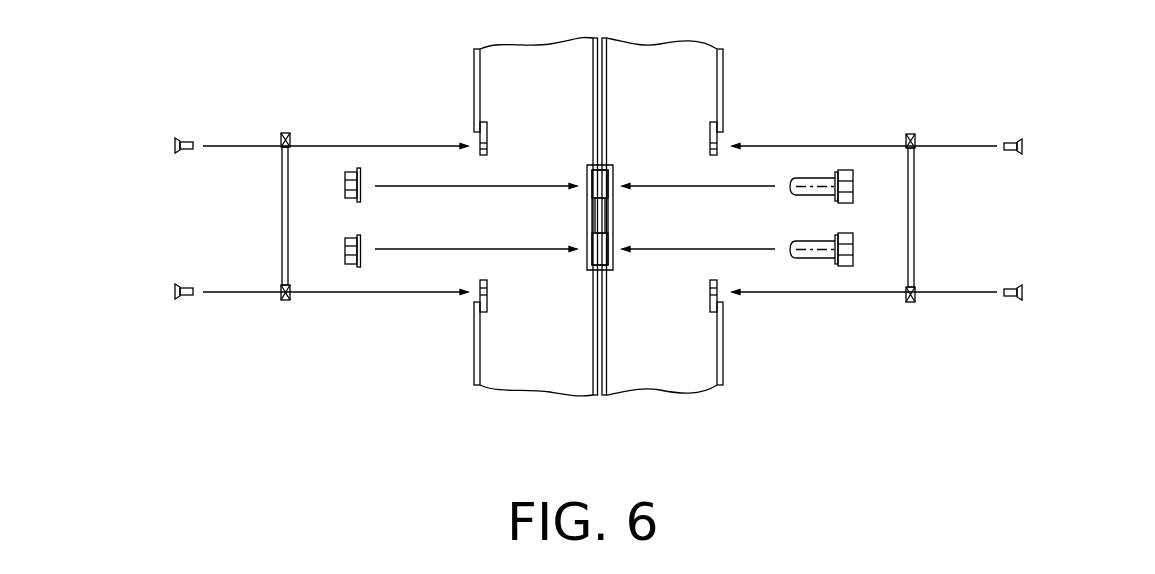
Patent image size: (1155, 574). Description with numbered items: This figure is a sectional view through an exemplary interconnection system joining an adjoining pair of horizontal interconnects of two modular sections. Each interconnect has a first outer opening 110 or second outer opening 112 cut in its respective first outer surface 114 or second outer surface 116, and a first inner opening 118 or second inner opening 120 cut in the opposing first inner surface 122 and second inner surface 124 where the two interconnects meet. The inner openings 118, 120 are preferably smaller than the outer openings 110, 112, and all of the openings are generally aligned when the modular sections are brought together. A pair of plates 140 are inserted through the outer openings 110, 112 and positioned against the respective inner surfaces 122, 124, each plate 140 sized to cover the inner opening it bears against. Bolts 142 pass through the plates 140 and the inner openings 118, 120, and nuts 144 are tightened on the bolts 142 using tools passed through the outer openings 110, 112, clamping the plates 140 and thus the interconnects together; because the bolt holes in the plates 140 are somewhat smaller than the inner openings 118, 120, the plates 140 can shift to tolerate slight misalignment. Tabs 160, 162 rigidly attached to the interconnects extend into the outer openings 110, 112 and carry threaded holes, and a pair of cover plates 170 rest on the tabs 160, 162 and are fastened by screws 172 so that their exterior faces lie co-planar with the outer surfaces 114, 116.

The first outer opening 110 is at (733, 244).
The second outer opening 112 is at (503, 244).
The first outer surface 114 is at (723, 348).
The second outer surface 116 is at (475, 348).
The first inner opening 118 is at (605, 271).
The second inner opening 120 is at (595, 271).
The first inner surface 122 is at (603, 378).
The second inner surface 124 is at (595, 372).
The plate 140 is at (588, 220).
The bolt 142 is at (845, 170).
The nut 144 is at (350, 168).
The tab 160 is at (712, 121).
The tab 162 is at (485, 121).
The cover plate 170 is at (282, 232).
The screw 172 is at (182, 155).